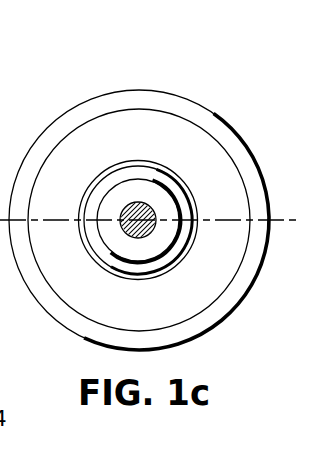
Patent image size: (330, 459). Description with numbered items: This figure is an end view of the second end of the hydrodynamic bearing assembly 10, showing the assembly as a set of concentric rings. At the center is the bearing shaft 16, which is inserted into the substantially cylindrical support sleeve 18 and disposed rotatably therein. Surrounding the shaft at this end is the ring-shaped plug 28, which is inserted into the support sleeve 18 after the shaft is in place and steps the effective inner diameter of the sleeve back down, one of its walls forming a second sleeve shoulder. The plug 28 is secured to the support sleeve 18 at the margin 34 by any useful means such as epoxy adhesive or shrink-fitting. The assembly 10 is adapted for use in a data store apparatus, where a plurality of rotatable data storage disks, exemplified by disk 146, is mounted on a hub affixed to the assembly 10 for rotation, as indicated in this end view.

The hydrodynamic bearing assembly 10 is at (235, 85).
The support sleeve 18 is at (55, 132).
The ring-shaped plug 28 is at (163, 148).
The data storage disk 146 is at (160, 210).
The bearing shaft 16 is at (140, 247).
The margin 34 is at (243, 262).